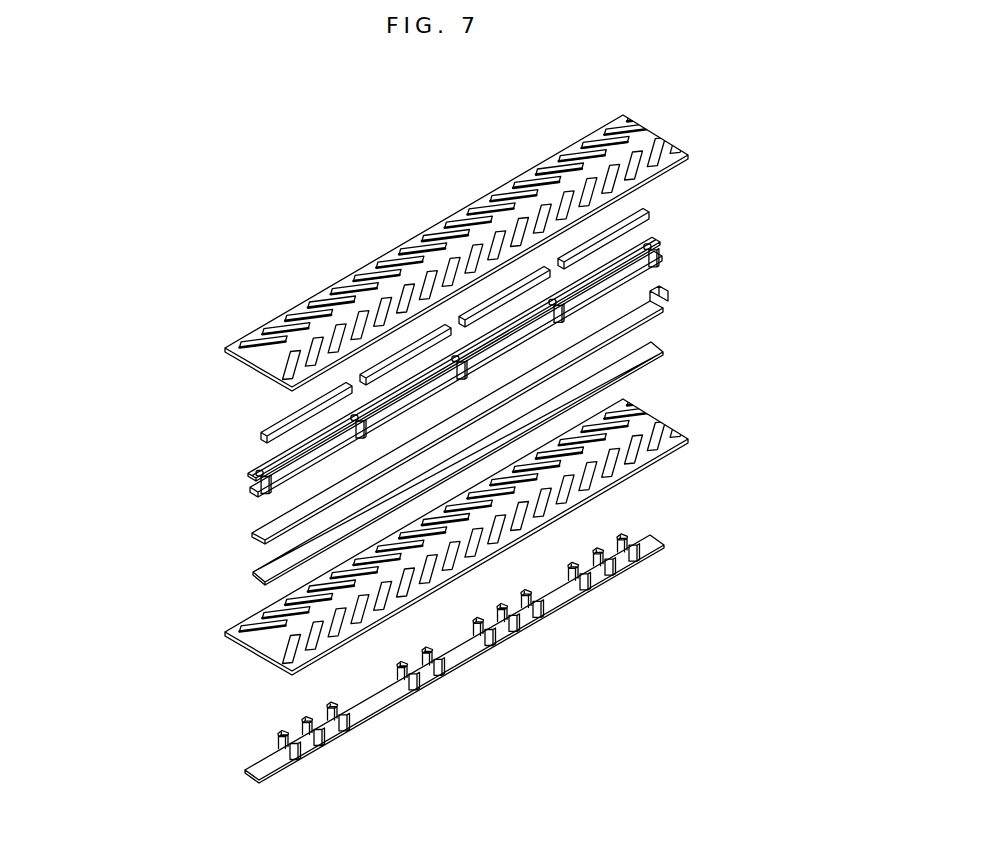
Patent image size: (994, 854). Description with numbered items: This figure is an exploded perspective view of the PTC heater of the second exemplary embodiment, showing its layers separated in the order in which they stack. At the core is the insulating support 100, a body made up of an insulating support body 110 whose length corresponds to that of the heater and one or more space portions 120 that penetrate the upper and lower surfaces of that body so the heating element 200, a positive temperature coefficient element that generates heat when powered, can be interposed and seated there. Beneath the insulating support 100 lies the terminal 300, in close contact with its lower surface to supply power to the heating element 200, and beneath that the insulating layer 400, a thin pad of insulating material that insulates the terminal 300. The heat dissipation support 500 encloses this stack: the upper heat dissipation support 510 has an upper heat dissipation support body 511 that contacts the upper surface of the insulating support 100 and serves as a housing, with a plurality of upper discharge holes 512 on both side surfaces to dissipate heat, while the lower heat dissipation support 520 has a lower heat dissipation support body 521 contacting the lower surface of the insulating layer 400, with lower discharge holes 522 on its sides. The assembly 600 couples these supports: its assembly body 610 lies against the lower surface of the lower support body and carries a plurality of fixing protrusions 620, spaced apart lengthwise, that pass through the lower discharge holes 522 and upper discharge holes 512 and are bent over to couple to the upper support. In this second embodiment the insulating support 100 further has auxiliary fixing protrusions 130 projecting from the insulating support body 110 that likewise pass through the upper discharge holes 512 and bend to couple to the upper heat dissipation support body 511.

The insulating support 100 is at (750, 232).
The insulating support body 110 is at (668, 248).
The space portion 120 is at (665, 270).
The auxiliary fixing protrusion 130 is at (670, 258).
The heating element 200 is at (657, 215).
The terminal 300 is at (668, 308).
The insulating layer 400 is at (655, 347).
The heat dissipation support 500 is at (98, 401).
The upper heat dissipation support 510 is at (150, 397).
The upper heat dissipation support body 511 is at (272, 368).
The upper discharge hole 512 is at (284, 383).
The lower heat dissipation support 520 is at (150, 655).
The lower heat dissipation support body 521 is at (265, 640).
The lower discharge hole 522 is at (283, 652).
The assembly 600 is at (573, 655).
The assembly body 610 is at (476, 654).
The fixing protrusion 620 is at (500, 636).